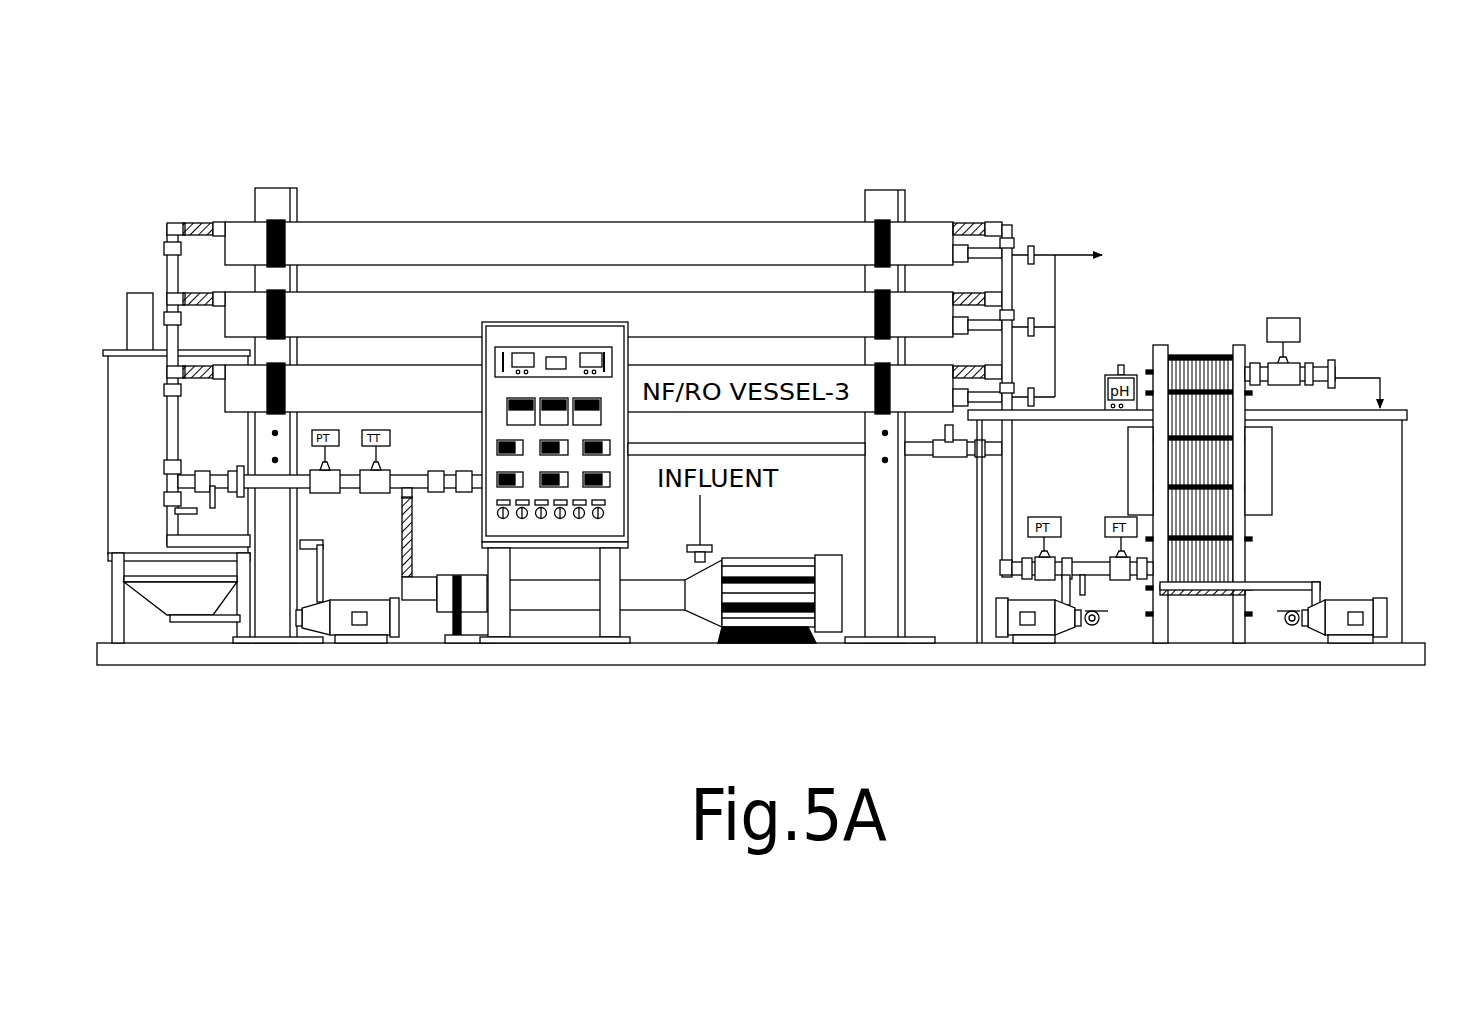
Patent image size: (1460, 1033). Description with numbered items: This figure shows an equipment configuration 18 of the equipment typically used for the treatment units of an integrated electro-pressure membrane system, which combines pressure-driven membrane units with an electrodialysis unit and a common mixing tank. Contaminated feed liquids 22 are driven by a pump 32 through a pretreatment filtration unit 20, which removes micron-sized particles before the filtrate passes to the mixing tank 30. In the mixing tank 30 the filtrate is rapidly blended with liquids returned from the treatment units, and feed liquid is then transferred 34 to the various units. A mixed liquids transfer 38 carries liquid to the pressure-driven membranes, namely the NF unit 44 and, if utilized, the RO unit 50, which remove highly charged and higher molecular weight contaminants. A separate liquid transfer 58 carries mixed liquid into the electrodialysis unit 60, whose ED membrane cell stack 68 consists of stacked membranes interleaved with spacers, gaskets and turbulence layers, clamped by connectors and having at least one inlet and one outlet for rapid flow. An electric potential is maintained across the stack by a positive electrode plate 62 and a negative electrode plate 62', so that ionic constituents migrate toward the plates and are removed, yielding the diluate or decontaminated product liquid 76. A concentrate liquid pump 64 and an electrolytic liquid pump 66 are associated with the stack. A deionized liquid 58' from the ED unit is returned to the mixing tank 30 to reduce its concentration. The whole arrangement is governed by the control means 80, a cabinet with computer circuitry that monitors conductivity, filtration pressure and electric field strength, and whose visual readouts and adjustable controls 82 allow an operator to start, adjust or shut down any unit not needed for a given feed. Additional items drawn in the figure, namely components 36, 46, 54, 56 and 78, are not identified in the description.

The equipment configuration 18 is at (697, 187).
The pretreatment filtration unit 20 is at (563, 597).
The contaminated feed liquids 22 is at (690, 547).
The mixing tank 30 is at (156, 491).
The pump 32 is at (785, 562).
The feed liquid transfer 34 is at (210, 617).
The feed pump 36 is at (362, 612).
The mixed liquids transfer 38 is at (168, 230).
The NF unit 44 is at (529, 222).
The permeate valve 46 is at (1045, 250).
The RO unit 50 is at (609, 290).
The permeate valve 54 is at (1040, 326).
The permeate valve 56 is at (1040, 396).
The liquid transfer to ED unit 58 is at (1099, 640).
The deionized liquid 58' is at (1148, 290).
The electrodialysis unit 60 is at (1199, 495).
The positive electrode plate 62 is at (1296, 481).
The negative electrode plate 62' is at (1110, 471).
The concentrate liquid pump 64 is at (1047, 628).
The electrolytic liquid pump 66 is at (1340, 628).
The ED membrane cell stack 68 is at (1213, 572).
The decontaminated product liquid 76 is at (1380, 392).
The diluate tank 78 is at (1346, 488).
The control means 80 is at (526, 405).
The adjustable controls 82 is at (553, 345).